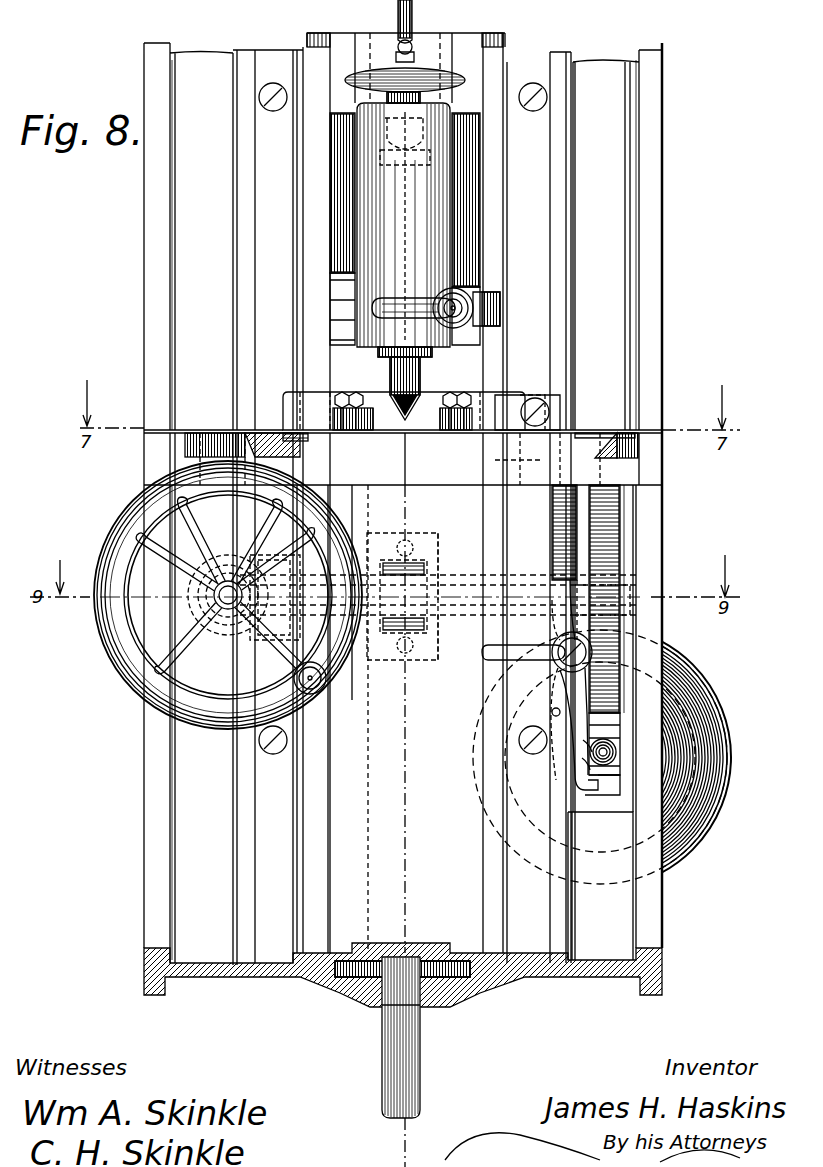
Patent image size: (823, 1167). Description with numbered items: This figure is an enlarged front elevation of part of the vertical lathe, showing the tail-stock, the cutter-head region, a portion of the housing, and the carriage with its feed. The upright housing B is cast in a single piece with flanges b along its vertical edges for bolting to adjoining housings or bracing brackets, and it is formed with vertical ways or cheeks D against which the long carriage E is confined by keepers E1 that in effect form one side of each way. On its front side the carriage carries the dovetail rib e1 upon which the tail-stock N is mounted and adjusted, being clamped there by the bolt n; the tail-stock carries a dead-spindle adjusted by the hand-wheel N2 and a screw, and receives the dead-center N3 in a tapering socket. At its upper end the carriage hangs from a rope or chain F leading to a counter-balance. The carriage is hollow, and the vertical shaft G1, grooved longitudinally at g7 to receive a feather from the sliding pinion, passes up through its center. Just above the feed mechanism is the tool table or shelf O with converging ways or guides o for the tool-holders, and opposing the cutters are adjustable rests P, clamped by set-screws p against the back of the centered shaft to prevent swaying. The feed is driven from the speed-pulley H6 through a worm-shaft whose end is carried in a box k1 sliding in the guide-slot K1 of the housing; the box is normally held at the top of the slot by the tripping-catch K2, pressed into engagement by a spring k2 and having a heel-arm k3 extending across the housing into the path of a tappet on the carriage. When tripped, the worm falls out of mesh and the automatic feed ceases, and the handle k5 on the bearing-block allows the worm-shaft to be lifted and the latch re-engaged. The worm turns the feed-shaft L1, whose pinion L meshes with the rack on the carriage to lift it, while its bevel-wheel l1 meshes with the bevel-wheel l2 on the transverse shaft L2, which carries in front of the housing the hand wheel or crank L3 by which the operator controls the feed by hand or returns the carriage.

The upright housing B is at (403, 504).
The flanges b is at (398, 510).
The carriage E is at (500, 30).
The keepers E1 is at (402, 505).
The dovetail rib e1 is at (380, 719).
The rope or chain F is at (412, 31).
The hand-wheel N2 is at (464, 86).
The tail-stock N is at (403, 230).
The bolt n is at (436, 308).
The dead-center N3 is at (405, 388).
The adjustable rests P is at (404, 397).
The set-screws p is at (400, 397).
The converging ways or guides o is at (404, 427).
The tool table or shelf O is at (403, 457).
The hand wheel or crank L3 is at (228, 595).
The transverse shaft L2 is at (228, 582).
The bevel-wheel l1 is at (275, 597).
The bevel-wheel l2 is at (263, 670).
The feed-shaft L1 is at (440, 596).
The pinion L is at (605, 565).
The heel-arm k3 is at (512, 648).
The tripping-catch K2 is at (557, 660).
The spring k2 is at (562, 745).
The guide-slot K1 is at (595, 787).
The handle k5 is at (618, 745).
The box k1 is at (618, 765).
The speed-pulley H6 is at (712, 692).
The vertical ways or cheeks D is at (318, 990).
The vertical shaft G1 is at (417, 1062).
The longitudinal groove g7 is at (398, 1074).